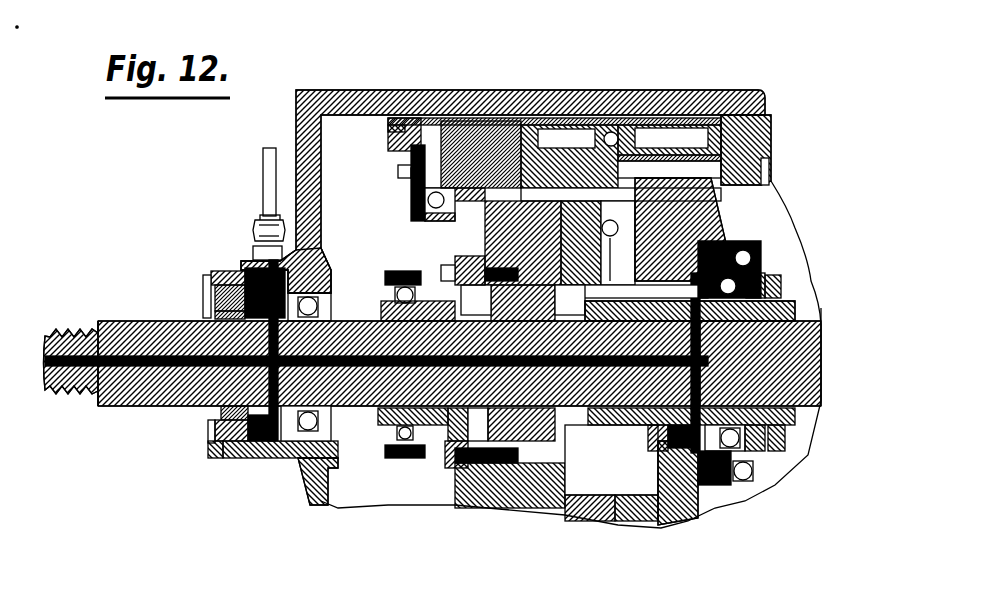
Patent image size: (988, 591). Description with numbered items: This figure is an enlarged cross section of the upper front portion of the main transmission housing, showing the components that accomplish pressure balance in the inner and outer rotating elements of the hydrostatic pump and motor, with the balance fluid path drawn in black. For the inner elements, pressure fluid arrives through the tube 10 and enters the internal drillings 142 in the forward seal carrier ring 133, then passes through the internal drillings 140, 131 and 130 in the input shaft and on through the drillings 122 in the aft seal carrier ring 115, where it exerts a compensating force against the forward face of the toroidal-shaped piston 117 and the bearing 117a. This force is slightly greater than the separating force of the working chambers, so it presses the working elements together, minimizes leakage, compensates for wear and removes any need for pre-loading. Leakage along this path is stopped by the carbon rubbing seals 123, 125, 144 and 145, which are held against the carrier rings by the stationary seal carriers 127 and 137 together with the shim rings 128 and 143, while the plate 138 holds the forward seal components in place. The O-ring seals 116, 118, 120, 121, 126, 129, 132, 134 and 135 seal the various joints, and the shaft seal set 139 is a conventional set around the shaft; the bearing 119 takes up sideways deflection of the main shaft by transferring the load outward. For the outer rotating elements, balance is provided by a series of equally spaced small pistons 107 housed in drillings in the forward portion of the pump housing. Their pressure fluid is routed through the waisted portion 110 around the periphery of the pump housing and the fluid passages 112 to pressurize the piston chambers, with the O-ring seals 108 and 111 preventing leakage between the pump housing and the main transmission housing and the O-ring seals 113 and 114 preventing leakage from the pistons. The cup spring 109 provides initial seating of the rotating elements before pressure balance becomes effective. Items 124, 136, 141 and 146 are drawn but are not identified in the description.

The tube 10 is at (257, 180).
The small pistons 107 is at (395, 110).
The O-ring seal 108 is at (424, 112).
The cup spring 109 is at (434, 112).
The waisted portion 110 is at (478, 105).
The O-ring seal 111 is at (533, 110).
The fluid passages 112 is at (481, 154).
The O-ring seal 113 is at (407, 148).
The O-ring seal 114 is at (383, 130).
The aft seal carrier ring 115 is at (733, 170).
The O-ring seal 116 is at (720, 233).
The toroidal-shaped piston 117 is at (737, 233).
The bearing 117a is at (760, 248).
The O-ring seal 118 is at (760, 262).
The bearing 119 is at (777, 290).
The O-ring seal 120 is at (740, 317).
The O-ring seal 121 is at (813, 392).
The drillings 122 is at (733, 440).
The carbon rubbing seal 123 is at (741, 473).
The seal 124 is at (690, 495).
The carbon rubbing seal 125 is at (670, 513).
The O-ring seal 126 is at (643, 517).
The stationary seal carrier 127 is at (605, 513).
The shim ring 128 is at (663, 433).
The O-ring seal 129 is at (663, 420).
The internal drilling 130 is at (681, 383).
The internal drilling 131 is at (448, 365).
The O-ring seal 132 is at (313, 412).
The forward seal carrier ring 133 is at (322, 430).
The O-ring seal 134 is at (264, 448).
The O-ring seal 135 is at (233, 445).
The bearing block 136 is at (217, 447).
The stationary seal carrier 137 is at (195, 442).
The plate 138 is at (200, 422).
The shaft seal set 139 is at (214, 403).
The internal drilling 140 is at (258, 373).
The threaded end 141 is at (53, 363).
The internal drillings 142 is at (200, 302).
The shim ring 143 is at (207, 285).
The carbon rubbing seal 144 is at (203, 265).
The carbon rubbing seal 145 is at (315, 257).
The lock nut 146 is at (247, 238).